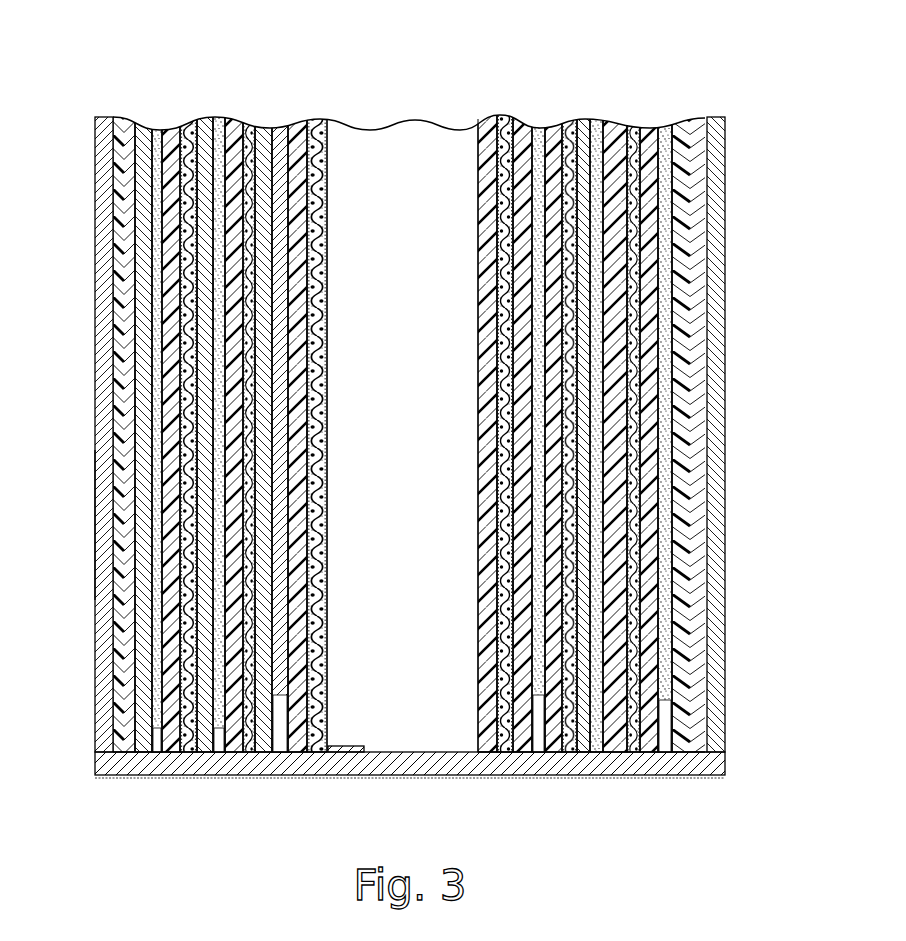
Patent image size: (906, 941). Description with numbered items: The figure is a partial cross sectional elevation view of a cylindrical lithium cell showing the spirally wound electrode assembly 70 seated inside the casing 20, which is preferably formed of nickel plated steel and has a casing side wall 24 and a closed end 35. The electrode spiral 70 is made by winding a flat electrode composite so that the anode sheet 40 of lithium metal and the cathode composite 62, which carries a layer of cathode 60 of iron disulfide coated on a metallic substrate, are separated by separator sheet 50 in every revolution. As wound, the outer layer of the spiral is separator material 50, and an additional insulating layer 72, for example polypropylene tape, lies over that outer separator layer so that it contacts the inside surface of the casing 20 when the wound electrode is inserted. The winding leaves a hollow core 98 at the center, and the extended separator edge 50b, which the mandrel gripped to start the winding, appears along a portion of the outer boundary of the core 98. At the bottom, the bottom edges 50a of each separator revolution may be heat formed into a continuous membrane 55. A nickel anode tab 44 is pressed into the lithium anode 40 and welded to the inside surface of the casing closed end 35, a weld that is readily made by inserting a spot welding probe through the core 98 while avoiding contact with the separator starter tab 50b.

The casing 20 is at (96, 246).
The casing side wall 24 is at (95, 520).
The closed end of casing 35 is at (585, 776).
The anode sheet 40 is at (158, 125).
The anode tab 44 is at (345, 752).
The separator sheet 50 is at (140, 119).
The bottom edges of separator 50a is at (200, 752).
The extended separator edge 50b is at (490, 118).
The continuous membrane 55 is at (280, 752).
The cathode 60 is at (187, 122).
The cathode composite 62 is at (178, 625).
The spirally wound electrode assembly 70 is at (137, 685).
The insulating layer 72 is at (120, 330).
The core 98 is at (386, 409).